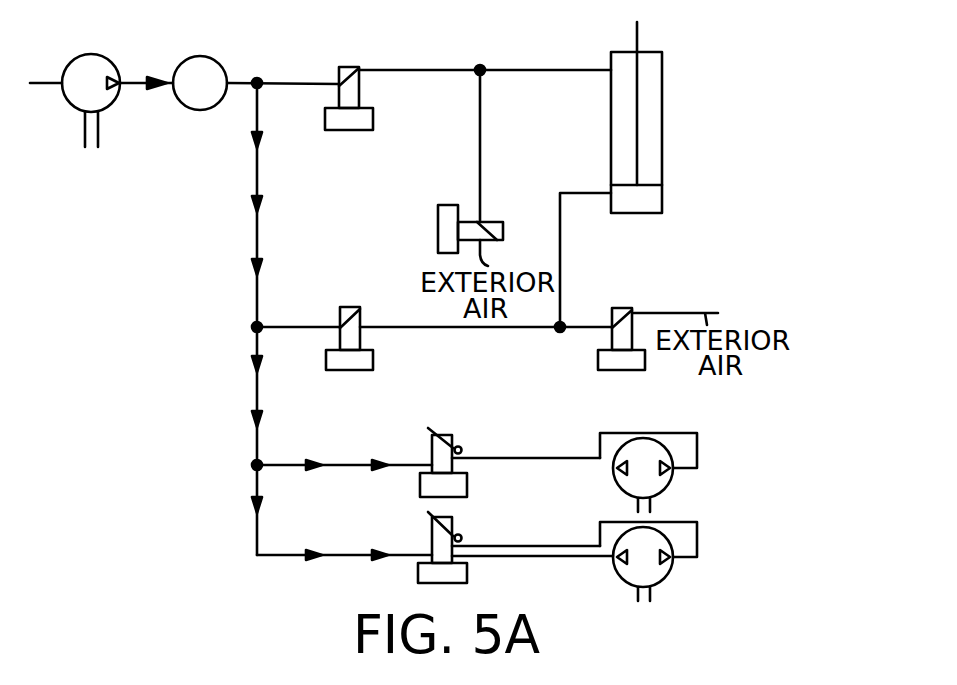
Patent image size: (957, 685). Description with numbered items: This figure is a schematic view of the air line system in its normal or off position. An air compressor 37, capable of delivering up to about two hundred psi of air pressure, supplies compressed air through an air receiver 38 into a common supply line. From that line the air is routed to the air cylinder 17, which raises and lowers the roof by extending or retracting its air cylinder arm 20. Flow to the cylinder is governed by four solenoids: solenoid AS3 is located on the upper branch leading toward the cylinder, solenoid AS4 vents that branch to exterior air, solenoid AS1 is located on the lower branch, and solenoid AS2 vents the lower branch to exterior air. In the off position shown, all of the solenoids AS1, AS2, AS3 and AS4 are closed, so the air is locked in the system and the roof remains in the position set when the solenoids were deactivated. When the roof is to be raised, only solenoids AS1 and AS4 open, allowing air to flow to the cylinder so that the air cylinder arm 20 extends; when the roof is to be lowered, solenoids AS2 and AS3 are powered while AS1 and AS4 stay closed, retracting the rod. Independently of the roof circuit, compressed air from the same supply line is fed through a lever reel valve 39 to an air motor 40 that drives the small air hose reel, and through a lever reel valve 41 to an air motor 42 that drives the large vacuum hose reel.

The air compressor 37 is at (90, 65).
The air receiver 38 is at (200, 67).
The air cylinder arm 20 is at (637, 42).
The air cylinder 17 is at (663, 157).
The lever reel valve 39 is at (440, 435).
The air motor 40 is at (662, 487).
The lever reel valve 41 is at (440, 518).
The air motor 42 is at (662, 576).
The solenoid AS1 is at (350, 370).
The solenoid AS2 is at (625, 370).
The solenoid AS3 is at (347, 130).
The solenoid AS4 is at (438, 232).